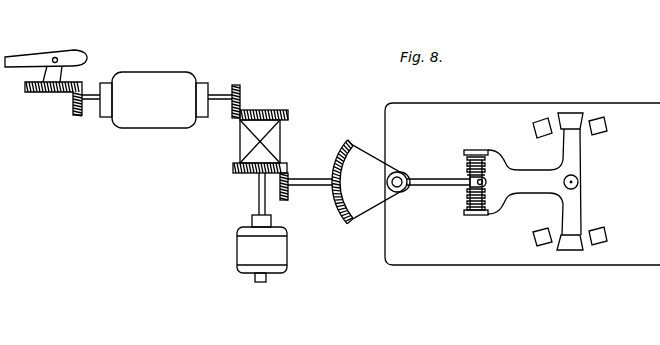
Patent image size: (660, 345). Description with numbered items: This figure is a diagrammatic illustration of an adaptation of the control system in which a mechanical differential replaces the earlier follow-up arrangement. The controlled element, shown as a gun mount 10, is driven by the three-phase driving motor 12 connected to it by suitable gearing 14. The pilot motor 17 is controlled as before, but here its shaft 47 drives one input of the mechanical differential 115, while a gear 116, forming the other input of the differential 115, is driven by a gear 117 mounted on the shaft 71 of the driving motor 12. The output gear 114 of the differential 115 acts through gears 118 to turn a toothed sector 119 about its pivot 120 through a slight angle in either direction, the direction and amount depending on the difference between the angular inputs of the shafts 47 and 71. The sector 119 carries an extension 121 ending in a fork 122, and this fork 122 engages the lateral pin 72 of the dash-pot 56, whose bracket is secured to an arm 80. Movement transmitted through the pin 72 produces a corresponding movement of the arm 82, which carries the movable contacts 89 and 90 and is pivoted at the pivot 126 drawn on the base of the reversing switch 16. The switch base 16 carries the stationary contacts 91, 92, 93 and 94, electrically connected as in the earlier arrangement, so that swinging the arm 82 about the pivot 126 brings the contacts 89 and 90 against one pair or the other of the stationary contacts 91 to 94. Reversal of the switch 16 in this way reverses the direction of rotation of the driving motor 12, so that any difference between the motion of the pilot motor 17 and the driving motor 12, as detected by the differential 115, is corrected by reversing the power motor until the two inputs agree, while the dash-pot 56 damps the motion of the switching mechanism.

The gun mount 10 is at (25, 57).
The three-phase driving motor 12 is at (152, 74).
The gearing 14 is at (73, 95).
The reversing switch 16 is at (630, 104).
The pilot motor 17 is at (246, 247).
The pilot motor shaft 47 is at (258, 195).
The dash-pot 56 is at (464, 226).
The driving motor shaft 71 is at (214, 92).
The lateral pin 72 is at (490, 182).
The arm 80 is at (556, 200).
The arm 82 is at (580, 158).
The contact 89 is at (569, 113).
The contact 90 is at (572, 252).
The stationary contact 91 is at (533, 128).
The stationary contact 92 is at (608, 238).
The stationary contact 93 is at (608, 126).
The stationary contact 94 is at (533, 237).
The output gear 114 is at (240, 163).
The mechanical differential 115 is at (286, 141).
The gear 116 is at (272, 112).
The gear 117 is at (238, 87).
The gears 118 is at (336, 186).
The toothed sector 119 is at (347, 222).
The pivot 120 is at (399, 194).
The extension 121 is at (428, 176).
The fork 122 is at (465, 158).
The pivot 126 is at (579, 183).